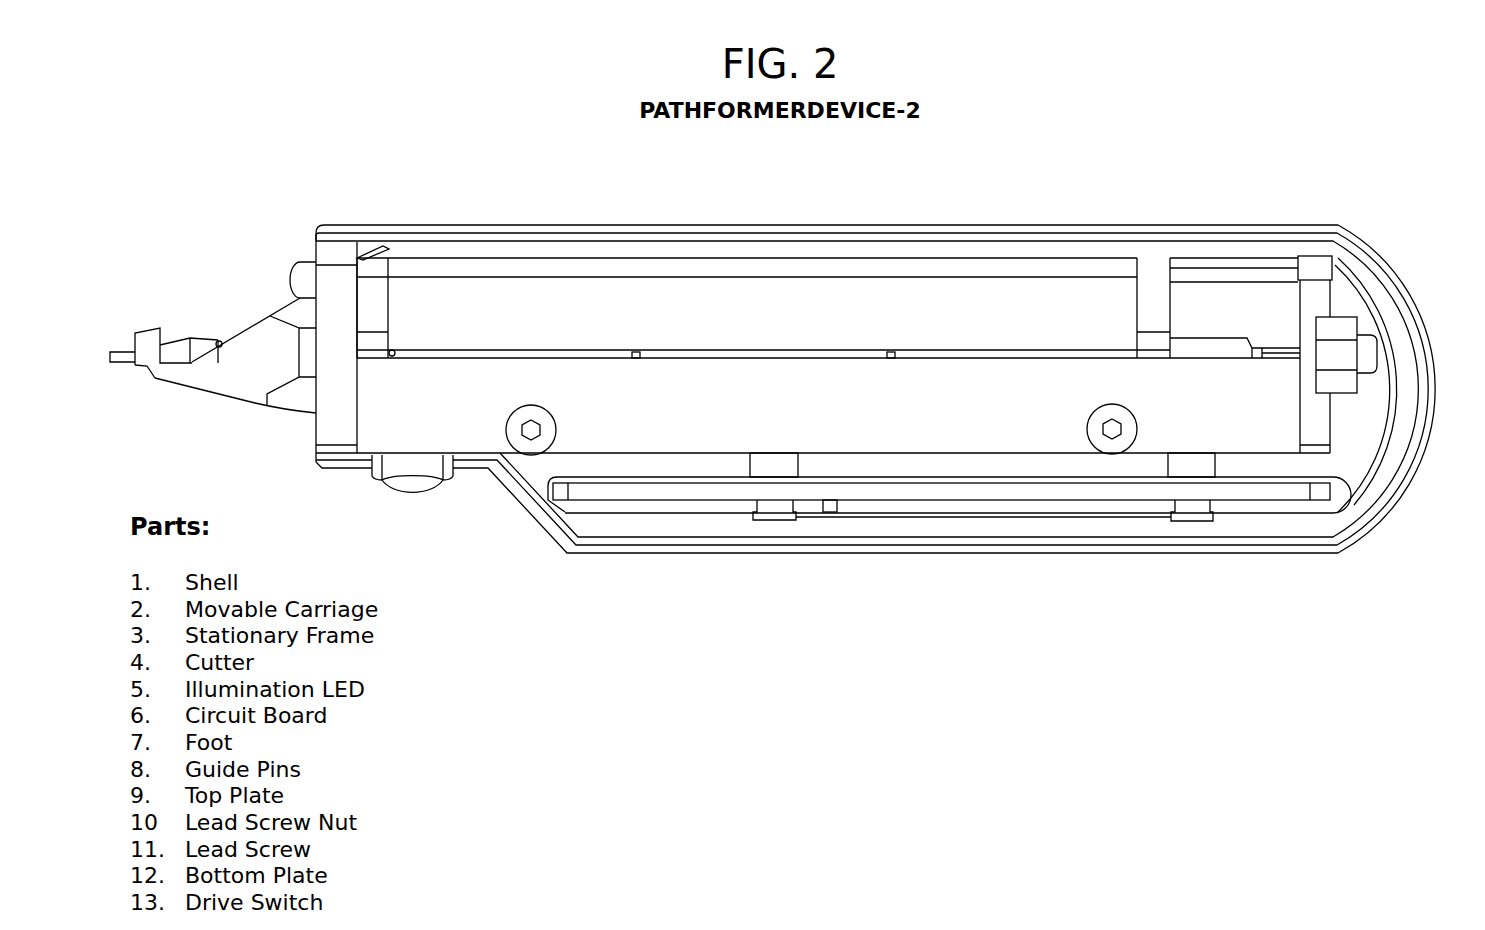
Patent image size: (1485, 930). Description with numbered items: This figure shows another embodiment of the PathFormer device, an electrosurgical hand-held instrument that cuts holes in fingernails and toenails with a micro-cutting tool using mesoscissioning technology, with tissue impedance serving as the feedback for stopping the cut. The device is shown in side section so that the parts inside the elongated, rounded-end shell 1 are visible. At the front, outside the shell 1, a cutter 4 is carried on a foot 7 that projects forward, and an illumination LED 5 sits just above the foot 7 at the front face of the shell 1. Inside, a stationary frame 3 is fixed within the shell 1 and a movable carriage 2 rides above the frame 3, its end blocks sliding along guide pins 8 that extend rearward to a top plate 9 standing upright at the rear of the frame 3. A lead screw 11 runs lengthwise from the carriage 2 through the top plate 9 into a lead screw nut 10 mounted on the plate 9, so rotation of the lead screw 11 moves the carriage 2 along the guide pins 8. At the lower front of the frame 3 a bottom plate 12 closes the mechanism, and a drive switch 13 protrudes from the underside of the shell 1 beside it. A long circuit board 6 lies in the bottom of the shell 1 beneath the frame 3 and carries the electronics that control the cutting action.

The shell 1 is at (706, 217).
The movable carriage 2 is at (552, 296).
The stationary frame 3 is at (638, 372).
The cutter 4 is at (106, 331).
The illumination LED 5 is at (282, 261).
The circuit board 6 is at (974, 487).
The foot 7 is at (214, 398).
The guide pins 8 is at (1224, 262).
The top plate 9 is at (1328, 291).
The lead screw nut 10 is at (1342, 383).
The lead screw 11 is at (1383, 355).
The bottom plate 12 is at (316, 432).
The drive switch 13 is at (393, 502).